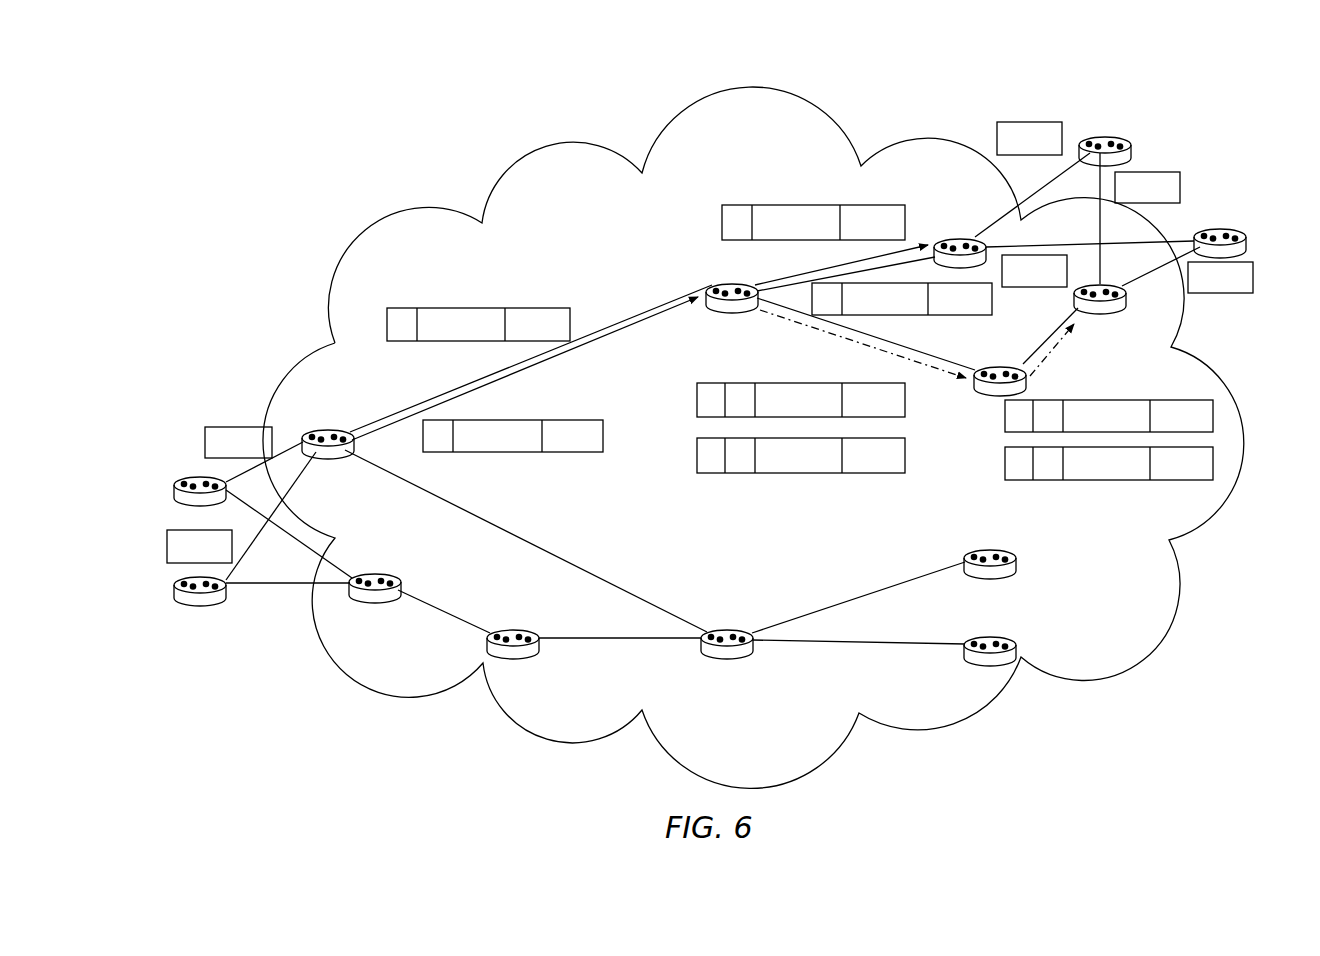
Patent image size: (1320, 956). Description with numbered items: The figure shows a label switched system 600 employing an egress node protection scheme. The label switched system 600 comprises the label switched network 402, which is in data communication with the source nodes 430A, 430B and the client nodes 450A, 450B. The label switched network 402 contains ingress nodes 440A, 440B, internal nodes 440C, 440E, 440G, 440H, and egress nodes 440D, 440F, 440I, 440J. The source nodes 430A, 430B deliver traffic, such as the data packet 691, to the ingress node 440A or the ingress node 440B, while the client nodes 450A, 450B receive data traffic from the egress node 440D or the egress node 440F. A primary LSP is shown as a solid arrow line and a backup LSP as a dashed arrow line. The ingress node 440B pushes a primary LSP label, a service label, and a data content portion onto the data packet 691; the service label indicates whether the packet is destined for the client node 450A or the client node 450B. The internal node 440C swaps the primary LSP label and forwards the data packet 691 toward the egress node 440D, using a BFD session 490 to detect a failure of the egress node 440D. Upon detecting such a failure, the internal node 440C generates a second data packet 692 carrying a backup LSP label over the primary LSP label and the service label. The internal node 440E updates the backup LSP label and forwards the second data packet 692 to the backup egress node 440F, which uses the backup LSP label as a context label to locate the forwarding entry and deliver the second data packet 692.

The label switched system 600 is at (311, 146).
The label switched network 402 is at (832, 124).
The source node 430A is at (175, 487).
The source node 430B is at (175, 582).
The ingress node 440A is at (378, 567).
The ingress node 440B is at (330, 452).
The internal node 440C is at (718, 281).
The egress node 440D is at (960, 238).
The internal node 440E is at (999, 397).
The egress node 440F is at (1103, 310).
The internal node 440G is at (515, 652).
The internal node 440H is at (730, 652).
The egress node 440I is at (1017, 560).
The egress node 440J is at (994, 630).
The client node 450A is at (1133, 147).
The client node 450B is at (1247, 240).
The BFD session 490 is at (793, 282).
The data packet 691 is at (596, 327).
The second data packet 692 is at (1004, 339).